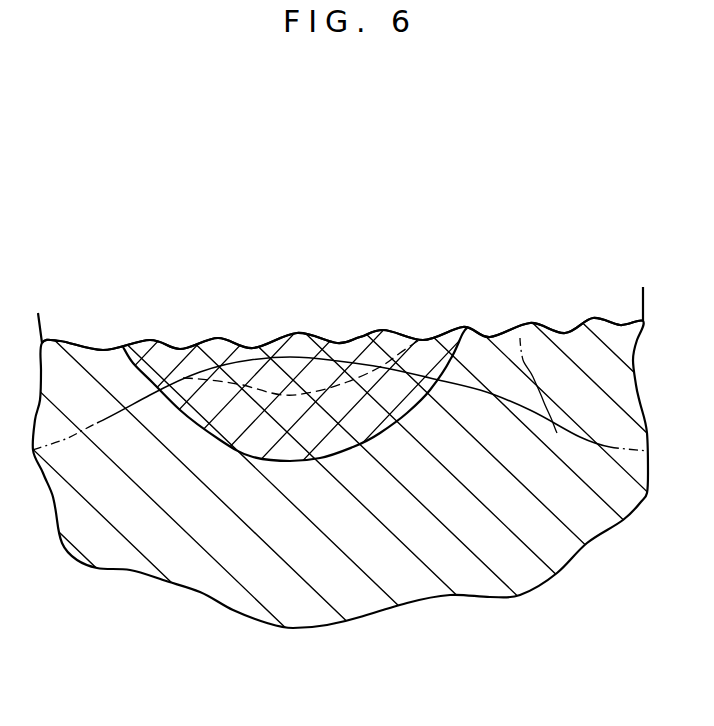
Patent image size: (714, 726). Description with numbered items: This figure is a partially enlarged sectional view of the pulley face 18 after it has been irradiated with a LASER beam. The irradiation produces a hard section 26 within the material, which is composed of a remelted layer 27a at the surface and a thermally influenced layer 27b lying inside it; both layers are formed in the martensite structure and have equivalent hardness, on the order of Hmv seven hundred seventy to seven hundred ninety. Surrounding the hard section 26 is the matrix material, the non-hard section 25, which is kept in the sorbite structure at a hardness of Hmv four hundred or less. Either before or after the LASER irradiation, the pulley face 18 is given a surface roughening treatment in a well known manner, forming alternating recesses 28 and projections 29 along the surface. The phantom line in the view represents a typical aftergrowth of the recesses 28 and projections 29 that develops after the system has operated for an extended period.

The pulley face 18 is at (628, 298).
The non-hard section 25 is at (79, 378).
The hard section 26 is at (425, 136).
The remelted layer 27a is at (300, 343).
The thermally influenced layer 27b is at (362, 413).
The recesses 28 is at (184, 345).
The projections 29 is at (292, 350).